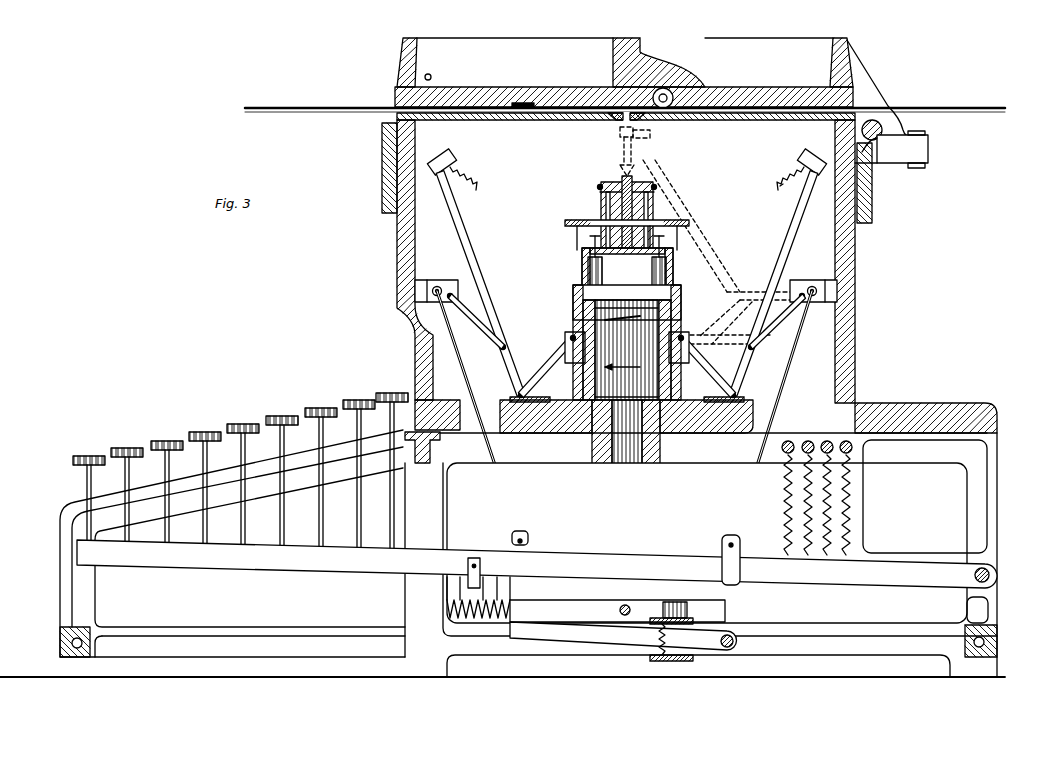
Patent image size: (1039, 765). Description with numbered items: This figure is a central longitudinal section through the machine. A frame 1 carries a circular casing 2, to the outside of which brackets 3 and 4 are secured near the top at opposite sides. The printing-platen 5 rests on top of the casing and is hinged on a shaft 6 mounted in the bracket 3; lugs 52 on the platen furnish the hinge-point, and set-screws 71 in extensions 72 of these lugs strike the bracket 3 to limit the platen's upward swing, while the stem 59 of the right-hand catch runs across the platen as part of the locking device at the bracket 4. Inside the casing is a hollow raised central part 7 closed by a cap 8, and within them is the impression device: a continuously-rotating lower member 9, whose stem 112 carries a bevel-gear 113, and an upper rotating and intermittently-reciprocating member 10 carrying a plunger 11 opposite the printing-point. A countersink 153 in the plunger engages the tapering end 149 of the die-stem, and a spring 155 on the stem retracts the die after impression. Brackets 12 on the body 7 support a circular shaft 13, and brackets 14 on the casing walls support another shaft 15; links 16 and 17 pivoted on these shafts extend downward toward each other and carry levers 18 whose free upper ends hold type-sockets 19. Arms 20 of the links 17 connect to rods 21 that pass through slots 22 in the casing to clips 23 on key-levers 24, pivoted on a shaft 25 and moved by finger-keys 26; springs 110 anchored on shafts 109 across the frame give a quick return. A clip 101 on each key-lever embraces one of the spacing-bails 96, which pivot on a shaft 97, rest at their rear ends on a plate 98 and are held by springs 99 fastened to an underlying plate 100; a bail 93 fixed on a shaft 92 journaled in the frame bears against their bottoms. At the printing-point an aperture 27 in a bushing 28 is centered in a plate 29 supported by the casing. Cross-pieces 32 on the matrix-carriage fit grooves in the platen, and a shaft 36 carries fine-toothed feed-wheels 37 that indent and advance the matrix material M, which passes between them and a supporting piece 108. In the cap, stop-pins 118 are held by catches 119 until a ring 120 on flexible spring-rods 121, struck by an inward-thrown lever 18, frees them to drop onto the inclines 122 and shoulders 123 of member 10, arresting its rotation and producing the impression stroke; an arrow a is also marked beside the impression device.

The frame 1 is at (538, 553).
The casing 2 is at (395, 323).
The bracket 3 is at (873, 183).
The bracket 4 is at (380, 198).
The printing-platen 5 is at (565, 38).
The shaft 6 is at (880, 137).
The raised central part 7 is at (537, 437).
The cap 8 is at (582, 289).
The lower member 9 is at (626, 350).
The upper member 10 is at (622, 320).
The plunger 11 is at (601, 206).
The brackets 12 is at (565, 340).
The circular shaft 13 is at (572, 336).
The brackets 14 is at (426, 280).
The circular shaft 15 is at (445, 284).
The links 16 is at (626, 367).
The links 17 is at (474, 322).
The levers 18 is at (476, 272).
The type-sockets 19 is at (450, 160).
The arms 20 is at (816, 306).
The rods 21 is at (470, 378).
The slots 22 is at (470, 405).
The clips 23 is at (510, 541).
The key-levers 24 is at (537, 564).
The shaft 25 is at (990, 575).
The finger-keys 26 is at (240, 475).
The aperture 27 is at (620, 121).
The bushing 28 is at (612, 121).
The plate 29 is at (503, 121).
The cross-pieces 32 is at (522, 103).
The shaft 36 is at (695, 76).
The feed-wheels 37 is at (675, 78).
The lugs 52 is at (877, 92).
The stem 59 is at (432, 76).
The set-screws 71 is at (917, 170).
The extensions 72 is at (930, 150).
The shaft 92 is at (736, 642).
The bail 93 is at (623, 636).
The spacing-bails 96 is at (617, 610).
The shaft 97 is at (625, 604).
The plate 98 is at (700, 620).
The springs 99 is at (668, 636).
The plate 100 is at (665, 662).
The clip 101 is at (466, 562).
The piece 108 is at (668, 118).
The shafts 109 is at (858, 450).
The springs 110 is at (853, 510).
The stem 112 is at (629, 468).
The bevel-gear 113 is at (540, 485).
The stop-pins 118 is at (588, 270).
The catches 119 is at (650, 224).
The ring 120 is at (565, 222).
The spring-rods 121 is at (577, 240).
The inclines 122 is at (573, 297).
The shoulders 123 is at (681, 298).
The tapering end 149 is at (780, 186).
The countersink 153 is at (620, 180).
The spring 155 is at (471, 172).
The matrix material M is at (625, 102).
The direction arrow a is at (622, 360).